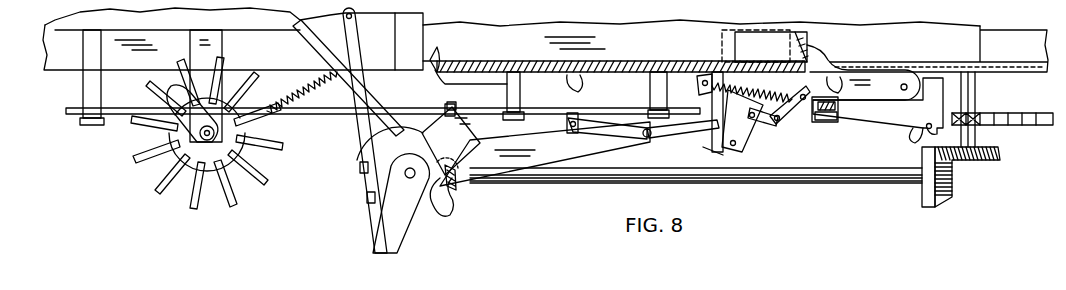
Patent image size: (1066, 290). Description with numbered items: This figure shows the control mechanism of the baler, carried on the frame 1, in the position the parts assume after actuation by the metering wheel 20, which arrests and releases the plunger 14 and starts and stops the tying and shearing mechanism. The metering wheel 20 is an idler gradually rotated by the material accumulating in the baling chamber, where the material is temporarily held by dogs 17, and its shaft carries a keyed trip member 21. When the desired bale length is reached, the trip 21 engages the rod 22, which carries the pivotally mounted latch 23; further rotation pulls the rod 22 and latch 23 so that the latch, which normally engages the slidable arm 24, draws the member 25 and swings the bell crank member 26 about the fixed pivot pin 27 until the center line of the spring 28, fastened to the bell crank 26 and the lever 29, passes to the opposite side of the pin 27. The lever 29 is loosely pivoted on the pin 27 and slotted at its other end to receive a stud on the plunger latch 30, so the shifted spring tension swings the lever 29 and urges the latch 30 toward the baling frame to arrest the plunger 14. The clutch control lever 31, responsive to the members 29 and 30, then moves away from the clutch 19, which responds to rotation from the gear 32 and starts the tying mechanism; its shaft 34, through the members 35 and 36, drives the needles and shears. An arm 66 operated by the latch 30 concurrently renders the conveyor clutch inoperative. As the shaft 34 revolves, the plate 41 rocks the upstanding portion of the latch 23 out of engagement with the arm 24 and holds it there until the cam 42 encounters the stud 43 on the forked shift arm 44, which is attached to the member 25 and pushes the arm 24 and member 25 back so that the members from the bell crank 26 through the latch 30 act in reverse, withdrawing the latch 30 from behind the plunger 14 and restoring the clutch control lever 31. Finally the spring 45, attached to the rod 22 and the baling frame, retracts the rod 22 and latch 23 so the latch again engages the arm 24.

The frame 1 is at (935, 62).
The plunger 14 is at (735, 42).
The dogs 17 is at (437, 58).
The clutch 19 is at (920, 200).
The metering wheel 20 is at (158, 188).
The trip member 21 is at (192, 113).
The rod 22 is at (117, 113).
The latch 23 is at (486, 102).
The slidable arm 24 is at (601, 110).
The member 25 is at (683, 140).
The bell crank member 26 is at (742, 121).
The fixed pivot pin 27 is at (756, 120).
The spring 28 is at (712, 100).
The lever 29 is at (808, 113).
The plunger latch 30 is at (863, 72).
The clutch control lever 31 is at (895, 128).
The gear 32 is at (952, 188).
The shaft 34 is at (405, 173).
The member 35 is at (386, 130).
The member 36 is at (316, 47).
The plate 41 is at (418, 138).
The cam 42 is at (440, 220).
The stud 43 is at (458, 185).
The forked shift arm 44 is at (545, 154).
The spring 45 is at (303, 108).
The arm 66 is at (783, 122).